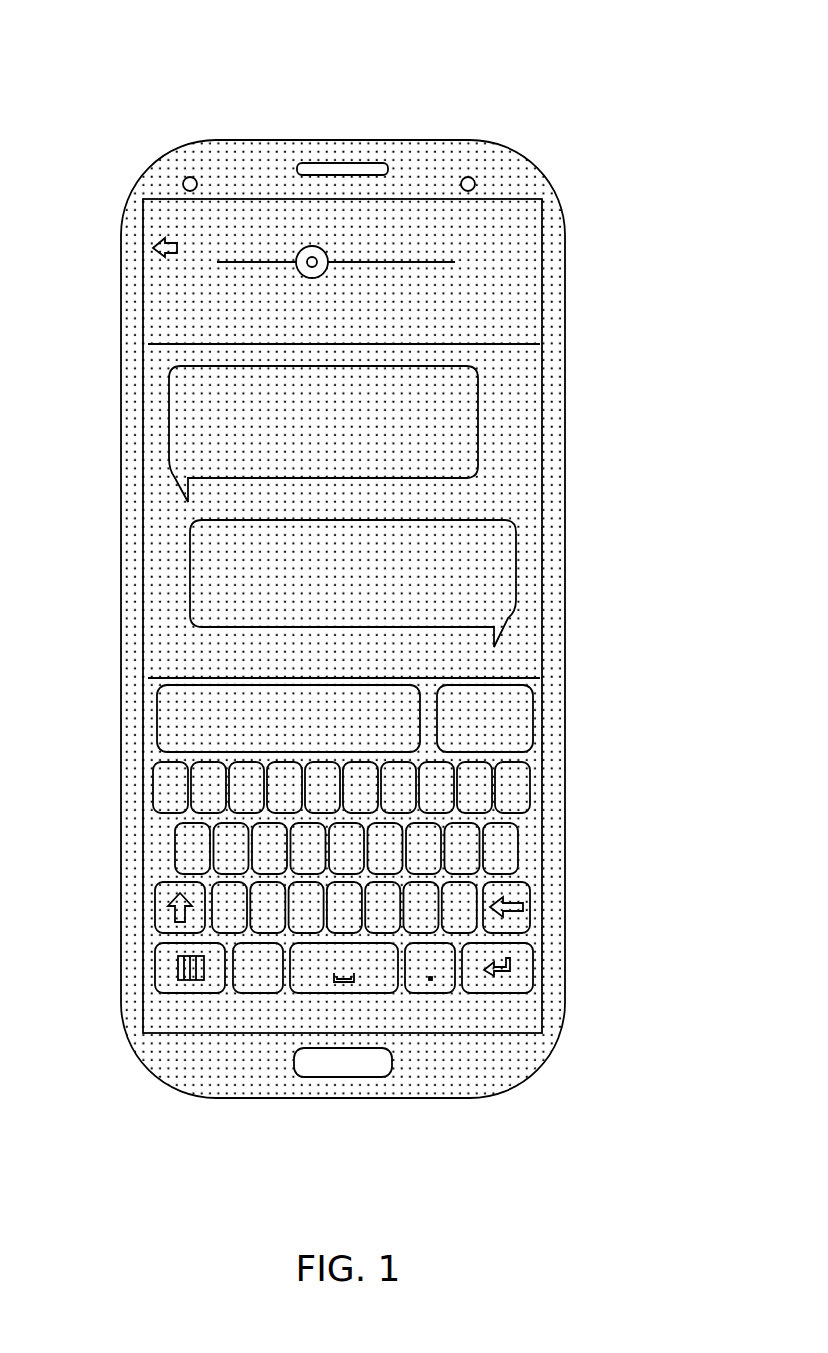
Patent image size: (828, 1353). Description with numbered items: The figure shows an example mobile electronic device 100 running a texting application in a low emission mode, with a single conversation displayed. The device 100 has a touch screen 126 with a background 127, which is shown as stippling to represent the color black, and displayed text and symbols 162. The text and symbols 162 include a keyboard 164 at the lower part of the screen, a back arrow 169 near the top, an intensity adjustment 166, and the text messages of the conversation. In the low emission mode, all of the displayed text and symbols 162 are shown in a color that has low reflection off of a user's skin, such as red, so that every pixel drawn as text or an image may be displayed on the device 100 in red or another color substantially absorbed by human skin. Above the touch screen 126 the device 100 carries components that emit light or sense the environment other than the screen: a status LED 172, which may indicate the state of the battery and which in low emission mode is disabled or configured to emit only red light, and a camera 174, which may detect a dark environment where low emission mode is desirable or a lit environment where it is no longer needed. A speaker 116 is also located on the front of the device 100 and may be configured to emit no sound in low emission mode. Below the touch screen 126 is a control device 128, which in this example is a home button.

The mobile electronic device 100 is at (592, 186).
The speaker 116 is at (385, 160).
The intensity adjustment 166 is at (254, 262).
The camera 174 is at (190, 177).
The status LED 172 is at (470, 177).
The back arrow 169 is at (158, 243).
The background 127 is at (530, 297).
The touch screen 126 is at (532, 450).
The text and symbols 162 is at (517, 576).
The keyboard 164 is at (530, 790).
The control device 128 is at (395, 1070).